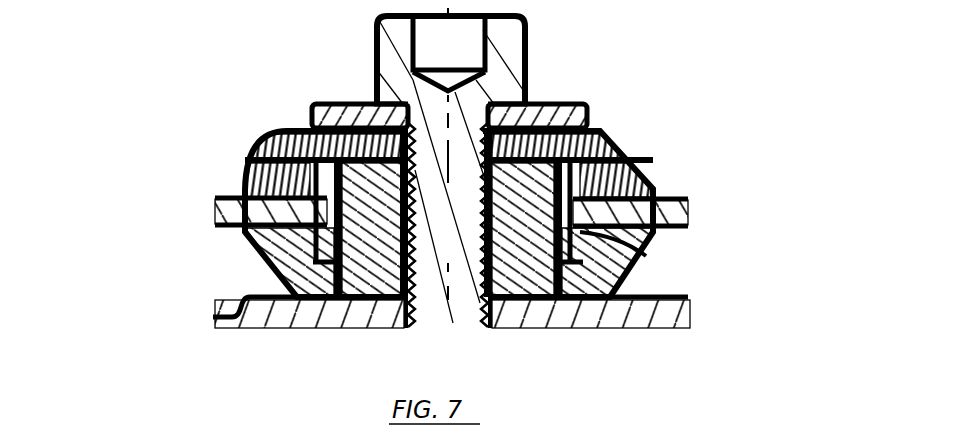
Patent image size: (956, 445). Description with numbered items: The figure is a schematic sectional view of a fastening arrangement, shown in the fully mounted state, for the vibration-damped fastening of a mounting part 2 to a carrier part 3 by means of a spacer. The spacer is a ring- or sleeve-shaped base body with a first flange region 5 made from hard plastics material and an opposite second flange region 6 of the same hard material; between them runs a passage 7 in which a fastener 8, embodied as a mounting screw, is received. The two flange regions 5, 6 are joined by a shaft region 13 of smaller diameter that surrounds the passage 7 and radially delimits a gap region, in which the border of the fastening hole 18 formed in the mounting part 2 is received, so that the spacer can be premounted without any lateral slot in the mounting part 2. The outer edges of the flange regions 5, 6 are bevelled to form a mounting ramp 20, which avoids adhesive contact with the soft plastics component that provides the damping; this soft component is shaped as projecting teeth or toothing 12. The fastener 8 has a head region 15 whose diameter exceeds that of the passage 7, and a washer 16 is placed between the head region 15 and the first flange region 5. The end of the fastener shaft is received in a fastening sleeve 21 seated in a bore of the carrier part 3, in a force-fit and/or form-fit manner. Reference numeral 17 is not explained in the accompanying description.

The mounting part 2 is at (285, 203).
The carrier part 3 is at (268, 318).
The first flange region 5 is at (290, 130).
The second flange region 6 is at (293, 263).
The passage 7 is at (530, 187).
The fastener 8 is at (457, 145).
The toothing 12 is at (290, 180).
The shaft region 13 is at (565, 240).
The head region 15 is at (390, 57).
The washer 16 is at (330, 109).
The bore edge 17 is at (510, 320).
The fastening hole 18 is at (325, 213).
The mounting ramp 20 is at (490, 197).
The fastening sleeve 21 is at (402, 318).